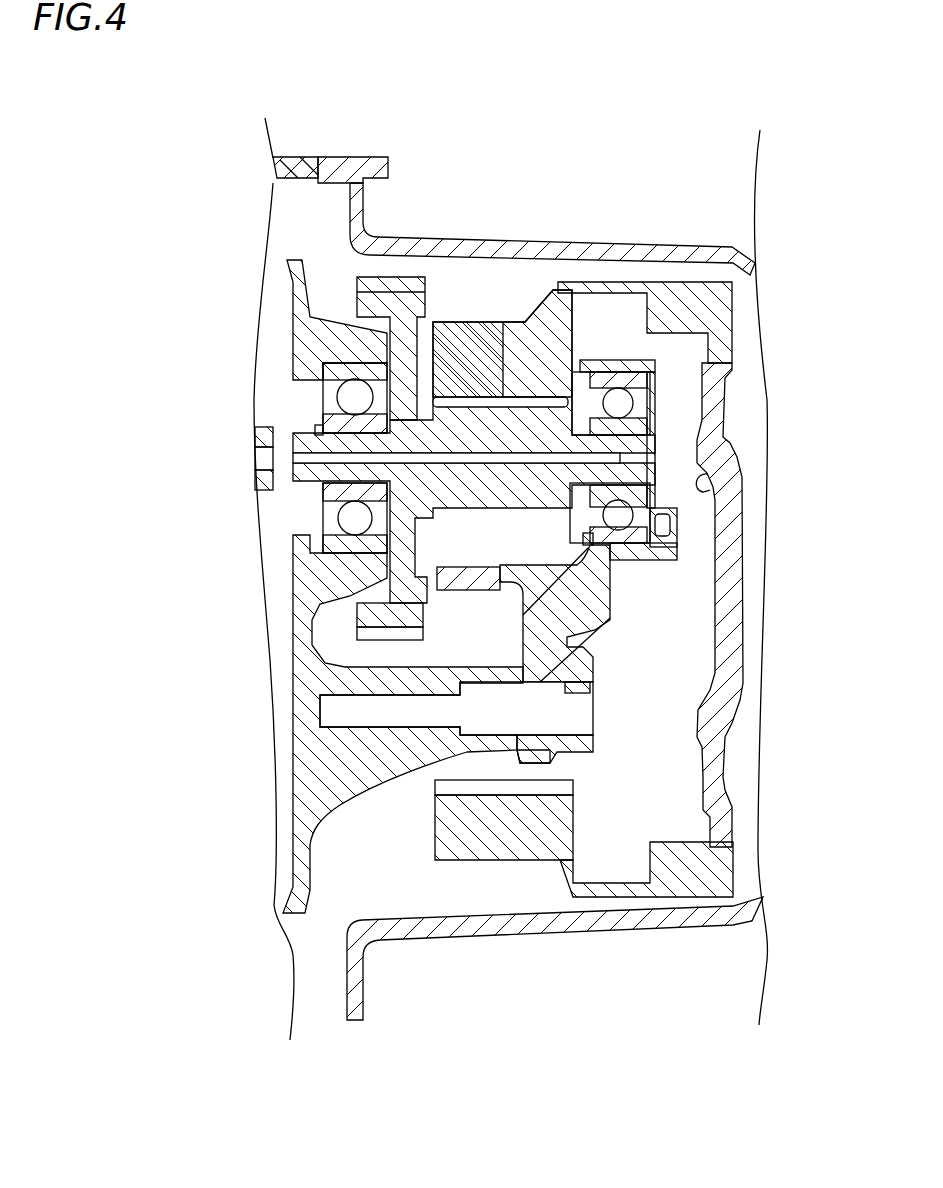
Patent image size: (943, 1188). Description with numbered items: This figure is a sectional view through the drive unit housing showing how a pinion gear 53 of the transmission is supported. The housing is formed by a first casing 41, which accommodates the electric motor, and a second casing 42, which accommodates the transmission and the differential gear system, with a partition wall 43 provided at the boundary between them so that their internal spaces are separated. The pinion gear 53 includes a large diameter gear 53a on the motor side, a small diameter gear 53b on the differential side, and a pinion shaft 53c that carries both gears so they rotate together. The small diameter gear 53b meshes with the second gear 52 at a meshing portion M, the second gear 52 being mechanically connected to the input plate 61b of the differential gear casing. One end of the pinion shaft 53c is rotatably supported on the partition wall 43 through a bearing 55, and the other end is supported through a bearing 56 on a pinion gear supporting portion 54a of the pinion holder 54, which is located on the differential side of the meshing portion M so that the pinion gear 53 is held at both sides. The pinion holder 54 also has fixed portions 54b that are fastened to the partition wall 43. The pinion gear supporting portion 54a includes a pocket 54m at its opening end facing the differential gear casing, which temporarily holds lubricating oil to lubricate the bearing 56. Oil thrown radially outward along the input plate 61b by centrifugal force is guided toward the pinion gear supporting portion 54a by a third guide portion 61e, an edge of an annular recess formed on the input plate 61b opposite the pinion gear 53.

The first casing 41 is at (292, 157).
The second casing 42 is at (600, 244).
The partition wall 43 is at (320, 753).
The second gear 52 is at (693, 302).
The pinion gear 53 is at (470, 328).
The large diameter gear 53a is at (403, 277).
The small diameter gear 53b is at (507, 396).
The pinion shaft 53c is at (535, 497).
The meshing portion M is at (536, 275).
The pinion holder 54 is at (605, 622).
The pinion gear supporting portion 54a is at (657, 385).
The fixed portion 54b is at (585, 744).
The pocket 54m is at (678, 512).
The bearing 55 is at (325, 380).
The bearing 56 is at (655, 423).
The input plate 61b is at (745, 679).
The third guide portion 61e is at (705, 483).